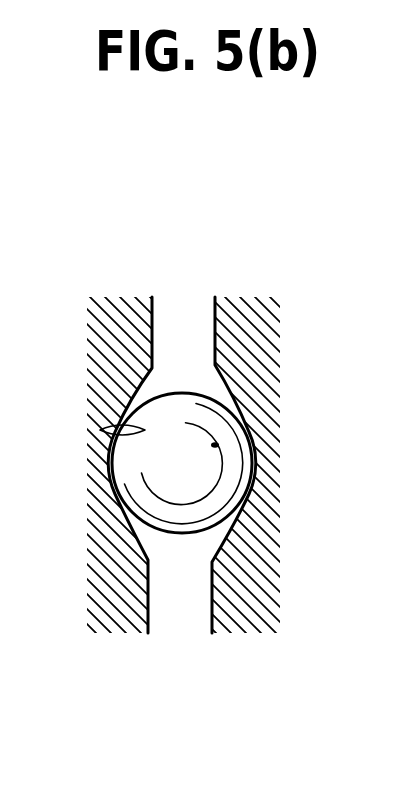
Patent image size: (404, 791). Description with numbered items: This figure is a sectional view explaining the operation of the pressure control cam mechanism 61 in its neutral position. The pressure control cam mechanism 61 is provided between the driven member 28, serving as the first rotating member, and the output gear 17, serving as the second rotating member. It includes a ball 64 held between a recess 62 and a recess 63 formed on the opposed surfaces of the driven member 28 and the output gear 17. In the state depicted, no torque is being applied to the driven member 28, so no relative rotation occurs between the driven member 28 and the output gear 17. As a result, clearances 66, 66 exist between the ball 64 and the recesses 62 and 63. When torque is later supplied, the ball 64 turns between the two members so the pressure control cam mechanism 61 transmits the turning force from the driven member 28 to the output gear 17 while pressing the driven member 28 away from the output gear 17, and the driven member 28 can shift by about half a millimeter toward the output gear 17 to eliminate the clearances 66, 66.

The pressure control cam mechanism 61 is at (190, 333).
The driven member 28 is at (95, 363).
The output gear 17 is at (263, 418).
The recess 62 is at (100, 430).
The recess 63 is at (217, 445).
The ball 64 is at (180, 512).
The clearance 66 is at (106, 463).